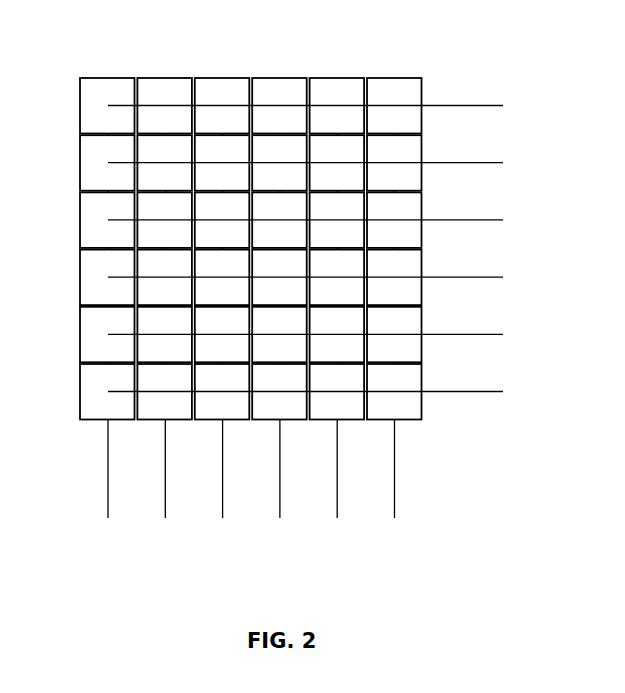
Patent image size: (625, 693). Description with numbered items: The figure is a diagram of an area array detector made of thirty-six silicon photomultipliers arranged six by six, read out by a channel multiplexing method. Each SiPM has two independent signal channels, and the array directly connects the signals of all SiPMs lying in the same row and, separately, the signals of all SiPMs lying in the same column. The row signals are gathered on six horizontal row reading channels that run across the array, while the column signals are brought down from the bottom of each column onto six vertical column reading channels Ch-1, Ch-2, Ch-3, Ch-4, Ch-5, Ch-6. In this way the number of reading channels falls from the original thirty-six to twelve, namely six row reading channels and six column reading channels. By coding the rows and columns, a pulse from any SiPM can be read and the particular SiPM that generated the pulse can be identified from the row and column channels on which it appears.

The column reading channel Ch-1 is at (84, 326).
The column reading channel Ch-2 is at (141, 326).
The column reading channel Ch-3 is at (198, 326).
The column reading channel Ch-4 is at (255, 326).
The column reading channel Ch-5 is at (311, 326).
The column reading channel Ch-6 is at (369, 326).